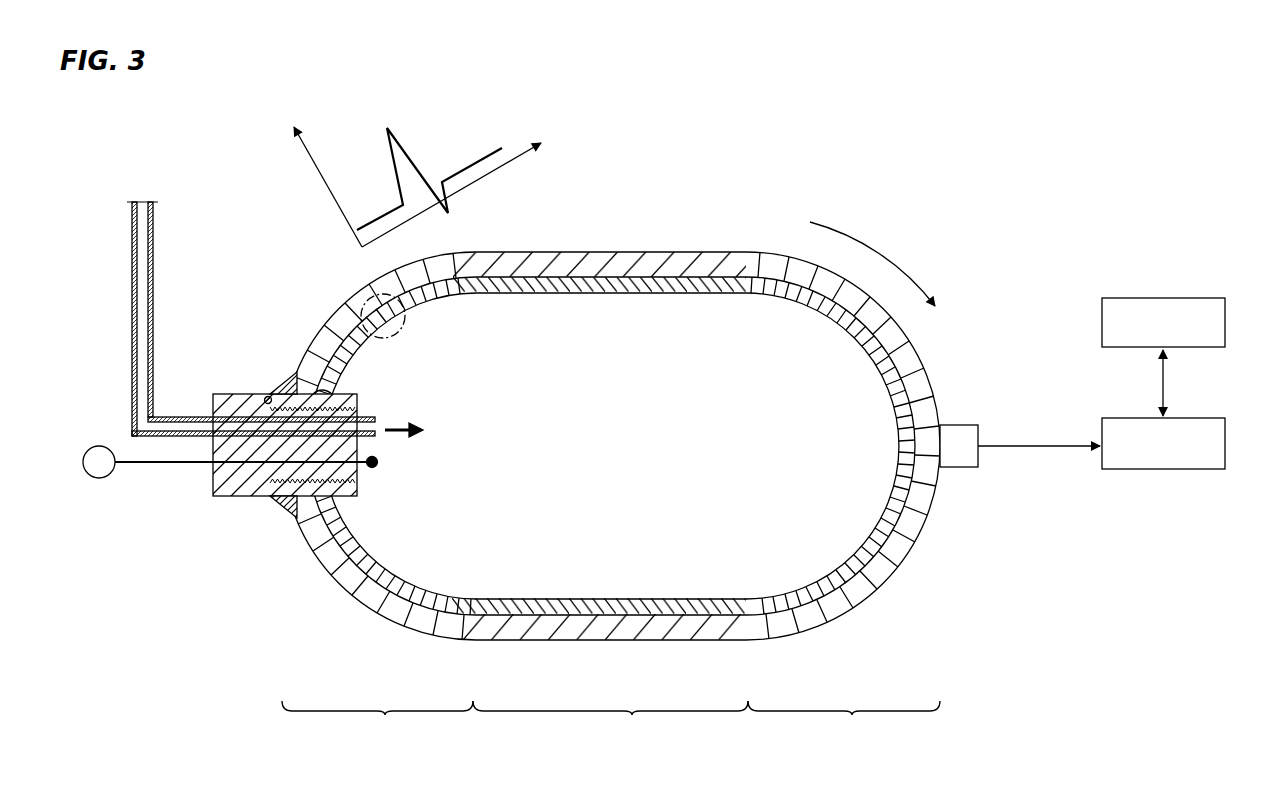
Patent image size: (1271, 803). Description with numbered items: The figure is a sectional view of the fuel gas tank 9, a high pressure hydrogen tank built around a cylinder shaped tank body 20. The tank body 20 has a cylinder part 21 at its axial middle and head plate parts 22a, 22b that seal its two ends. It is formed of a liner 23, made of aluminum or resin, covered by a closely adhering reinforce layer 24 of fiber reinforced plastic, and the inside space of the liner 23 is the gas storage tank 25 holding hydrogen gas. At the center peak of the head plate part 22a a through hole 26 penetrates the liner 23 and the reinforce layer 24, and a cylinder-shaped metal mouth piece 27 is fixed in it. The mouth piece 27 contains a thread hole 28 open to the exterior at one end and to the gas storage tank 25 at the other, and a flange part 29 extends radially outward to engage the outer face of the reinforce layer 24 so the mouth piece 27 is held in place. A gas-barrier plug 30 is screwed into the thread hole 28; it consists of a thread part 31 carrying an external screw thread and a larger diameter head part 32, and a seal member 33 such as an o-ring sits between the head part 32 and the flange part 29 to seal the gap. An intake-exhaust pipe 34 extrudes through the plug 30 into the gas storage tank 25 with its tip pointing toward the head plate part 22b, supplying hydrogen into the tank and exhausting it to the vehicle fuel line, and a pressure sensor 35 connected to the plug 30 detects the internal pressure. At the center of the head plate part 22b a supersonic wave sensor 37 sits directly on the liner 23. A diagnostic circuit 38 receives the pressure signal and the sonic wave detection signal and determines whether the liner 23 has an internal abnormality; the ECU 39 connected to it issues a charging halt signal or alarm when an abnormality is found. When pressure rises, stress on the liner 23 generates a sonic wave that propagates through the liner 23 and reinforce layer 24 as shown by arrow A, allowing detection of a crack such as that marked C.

The fuel gas tank 9 is at (1014, 148).
The tank body 20 is at (940, 382).
The cylinder part 21 is at (610, 728).
The head plate part 22a is at (377, 728).
The head plate part 22b is at (844, 728).
The liner 23 is at (676, 284).
The reinforce layer 24 is at (660, 253).
The gas storage tank 25 is at (713, 318).
The through hole 26 is at (328, 397).
The mouth piece 27 is at (284, 381).
The thread hole 28 is at (350, 480).
The flange part 29 is at (282, 496).
The plug 30 is at (211, 491).
The thread part 31 is at (340, 448).
The head part 32 is at (228, 502).
The seal member 33 is at (266, 396).
The intake-exhaust pipe 34 is at (155, 257).
The pressure sensor 35 is at (93, 479).
The supersonic wave sensor 37 is at (966, 469).
The diagnostic circuit 38 is at (1192, 470).
The ECU 39 is at (1164, 297).
The arrow A is at (872, 264).
The crack C is at (404, 333).